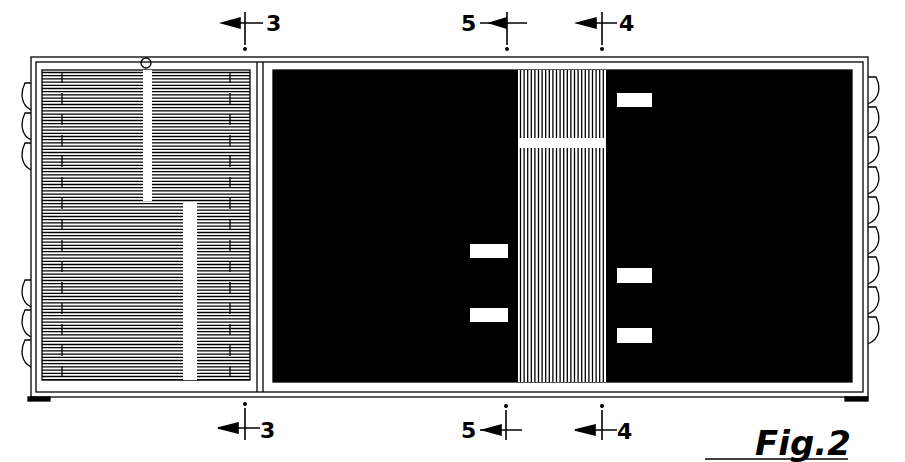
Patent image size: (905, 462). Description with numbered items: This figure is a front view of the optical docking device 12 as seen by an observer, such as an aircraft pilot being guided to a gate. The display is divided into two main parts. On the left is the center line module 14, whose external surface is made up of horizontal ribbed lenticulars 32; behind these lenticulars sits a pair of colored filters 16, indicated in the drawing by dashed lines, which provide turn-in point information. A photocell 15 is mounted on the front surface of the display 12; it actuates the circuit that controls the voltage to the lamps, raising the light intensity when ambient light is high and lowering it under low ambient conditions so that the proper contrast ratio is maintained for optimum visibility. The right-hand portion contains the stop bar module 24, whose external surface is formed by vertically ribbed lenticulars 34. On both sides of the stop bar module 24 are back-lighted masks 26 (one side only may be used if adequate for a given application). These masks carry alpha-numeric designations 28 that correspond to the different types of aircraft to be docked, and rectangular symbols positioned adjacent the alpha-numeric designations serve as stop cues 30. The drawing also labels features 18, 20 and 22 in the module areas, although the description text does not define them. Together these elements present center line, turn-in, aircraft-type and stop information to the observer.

The optical docking device 12 is at (391, 40).
The center line module 14 is at (105, 365).
The photocell 15 is at (146, 58).
The colored filters 16 is at (73, 62).
The lower slot 18 is at (188, 370).
The upper slot 20 is at (143, 110).
The transparent strip 22 is at (533, 140).
The stop bar module 24 is at (573, 383).
The back-lighted masks 26 is at (432, 382).
The alpha-numeric designations 28 is at (789, 80).
The stop cues 30 is at (637, 80).
The horizontal ribbed lenticulars 32 is at (147, 365).
The vertically ribbed lenticulars 34 is at (560, 82).